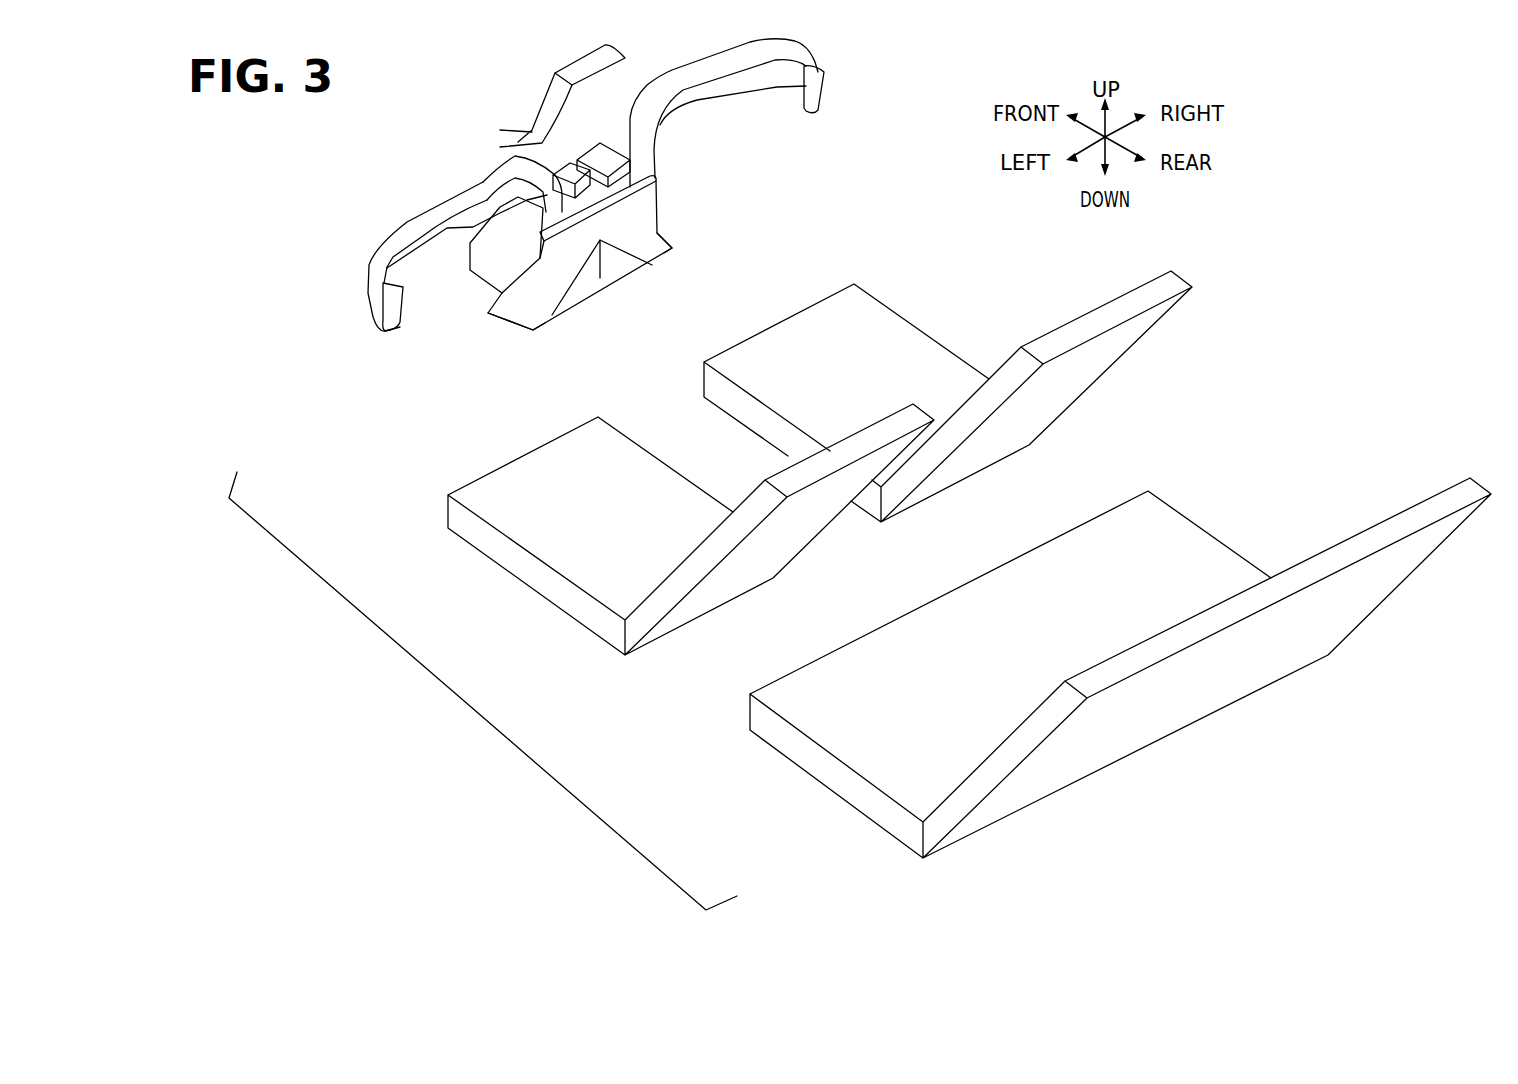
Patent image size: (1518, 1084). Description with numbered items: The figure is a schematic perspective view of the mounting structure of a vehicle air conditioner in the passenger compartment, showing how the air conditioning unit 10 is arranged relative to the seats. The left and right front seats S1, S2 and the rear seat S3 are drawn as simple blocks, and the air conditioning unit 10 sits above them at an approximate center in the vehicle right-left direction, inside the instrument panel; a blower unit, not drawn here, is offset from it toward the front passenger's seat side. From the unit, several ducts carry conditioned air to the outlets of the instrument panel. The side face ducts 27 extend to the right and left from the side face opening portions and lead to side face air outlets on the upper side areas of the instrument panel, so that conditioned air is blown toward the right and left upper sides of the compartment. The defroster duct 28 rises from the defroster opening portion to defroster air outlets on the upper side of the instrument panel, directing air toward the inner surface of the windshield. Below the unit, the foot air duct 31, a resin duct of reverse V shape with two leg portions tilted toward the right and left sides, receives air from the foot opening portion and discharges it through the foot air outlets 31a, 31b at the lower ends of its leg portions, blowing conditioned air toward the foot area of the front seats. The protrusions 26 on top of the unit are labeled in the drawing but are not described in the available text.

The air conditioning unit 10 is at (593, 207).
The contact protrusions 26 is at (603, 167).
The side face ducts 27 is at (408, 218).
The defroster duct 28 is at (548, 92).
The foot air duct 31 is at (620, 220).
The foot air outlet 31a is at (520, 322).
The foot air outlet 31b is at (665, 248).
The left front seat S1 is at (553, 543).
The right front seat S2 is at (920, 357).
The rear seat S3 is at (847, 743).